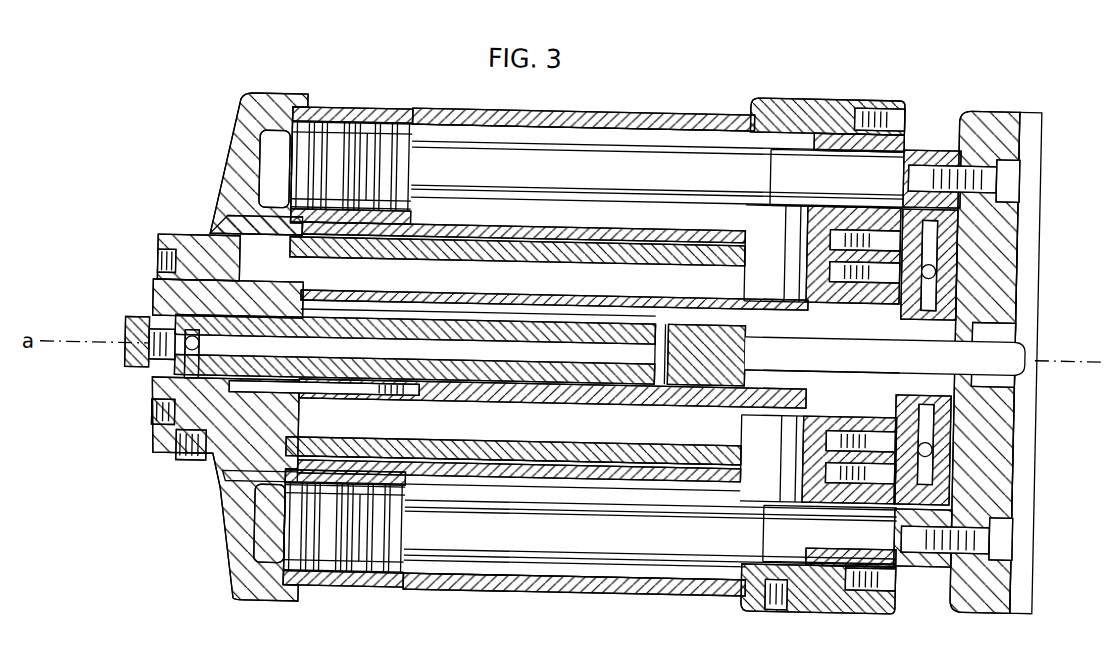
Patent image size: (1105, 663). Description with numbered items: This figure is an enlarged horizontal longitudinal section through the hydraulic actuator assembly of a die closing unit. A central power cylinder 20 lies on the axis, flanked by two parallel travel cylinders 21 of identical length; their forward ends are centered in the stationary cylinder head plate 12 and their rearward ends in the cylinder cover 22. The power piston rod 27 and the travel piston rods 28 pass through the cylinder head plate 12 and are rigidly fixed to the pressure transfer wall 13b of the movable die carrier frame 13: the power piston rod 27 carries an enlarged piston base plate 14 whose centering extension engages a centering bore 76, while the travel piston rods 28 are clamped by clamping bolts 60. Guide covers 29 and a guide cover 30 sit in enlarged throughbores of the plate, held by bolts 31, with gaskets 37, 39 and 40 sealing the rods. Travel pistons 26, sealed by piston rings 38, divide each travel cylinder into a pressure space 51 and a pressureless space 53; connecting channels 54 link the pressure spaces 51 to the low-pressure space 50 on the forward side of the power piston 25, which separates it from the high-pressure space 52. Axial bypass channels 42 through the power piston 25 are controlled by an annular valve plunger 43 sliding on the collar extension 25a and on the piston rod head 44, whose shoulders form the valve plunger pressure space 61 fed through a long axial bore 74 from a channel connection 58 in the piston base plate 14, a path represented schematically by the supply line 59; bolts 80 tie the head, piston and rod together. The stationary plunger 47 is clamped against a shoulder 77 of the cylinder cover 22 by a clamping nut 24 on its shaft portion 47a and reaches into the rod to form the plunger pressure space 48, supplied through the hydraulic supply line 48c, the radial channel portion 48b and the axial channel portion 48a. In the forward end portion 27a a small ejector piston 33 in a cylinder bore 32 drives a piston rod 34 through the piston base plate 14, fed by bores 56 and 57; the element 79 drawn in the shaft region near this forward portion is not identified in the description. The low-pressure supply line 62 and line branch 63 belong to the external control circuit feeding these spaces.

The cylinder head plate 12 is at (768, 110).
The movable die carrier frame 13 is at (980, 99).
The pressure transfer wall 13b is at (1002, 131).
The piston base plate 14 is at (945, 470).
The power cylinder 20 is at (534, 460).
The travel cylinders 21 is at (600, 238).
The cylinder cover 22 is at (188, 242).
The clamping nut 24 is at (128, 335).
The power piston 25 is at (418, 265).
The collar extension 25a is at (245, 512).
The travel pistons 26 is at (382, 165).
The power piston rod 27 is at (662, 410).
The forward end portion of the power piston rod 27a is at (815, 340).
The travel piston rods 28 is at (648, 172).
The guide covers 29 is at (804, 275).
The guide cover 30 is at (830, 136).
The bolts 31 is at (888, 112).
The cylinder bore 32 is at (762, 297).
The ejector piston 33 is at (722, 322).
The piston rod 34 is at (1010, 348).
The gasket 37 is at (868, 148).
The piston rings 38 is at (350, 140).
The gasket 39 is at (882, 500).
The gasket 40 is at (875, 340).
The bypass channels 42 is at (439, 470).
The annular valve plunger 43 is at (240, 478).
The piston rod head 44 is at (225, 437).
The stationary plunger 47 is at (477, 245).
The shaft portion 47a is at (125, 352).
The plunger pressure space 48 is at (642, 295).
The axial channel portion 48a is at (552, 245).
The radial channel portion 48b is at (178, 365).
The hydraulic supply line 48c is at (158, 420).
The low-pressure space 50 is at (560, 438).
The pressure spaces 51 is at (460, 140).
The high-pressure space 52 is at (228, 222).
The pressureless spaces 53 is at (271, 145).
The connecting channels 54 is at (792, 250).
The bore 56 is at (934, 432).
The bore 57 is at (934, 444).
The channel connection 58 is at (934, 264).
The supply line 59 is at (512, 242).
The clamping bolts 60 is at (1005, 172).
The valve plunger pressure space 61 is at (245, 165).
The low-pressure supply line 62 is at (781, 603).
The line branch 63 is at (158, 266).
The axial bore 74 is at (592, 300).
The centering bore 76 is at (1000, 322).
The shoulder 77 is at (185, 310).
The shaft 79 is at (672, 330).
The bolts 80 is at (418, 410).